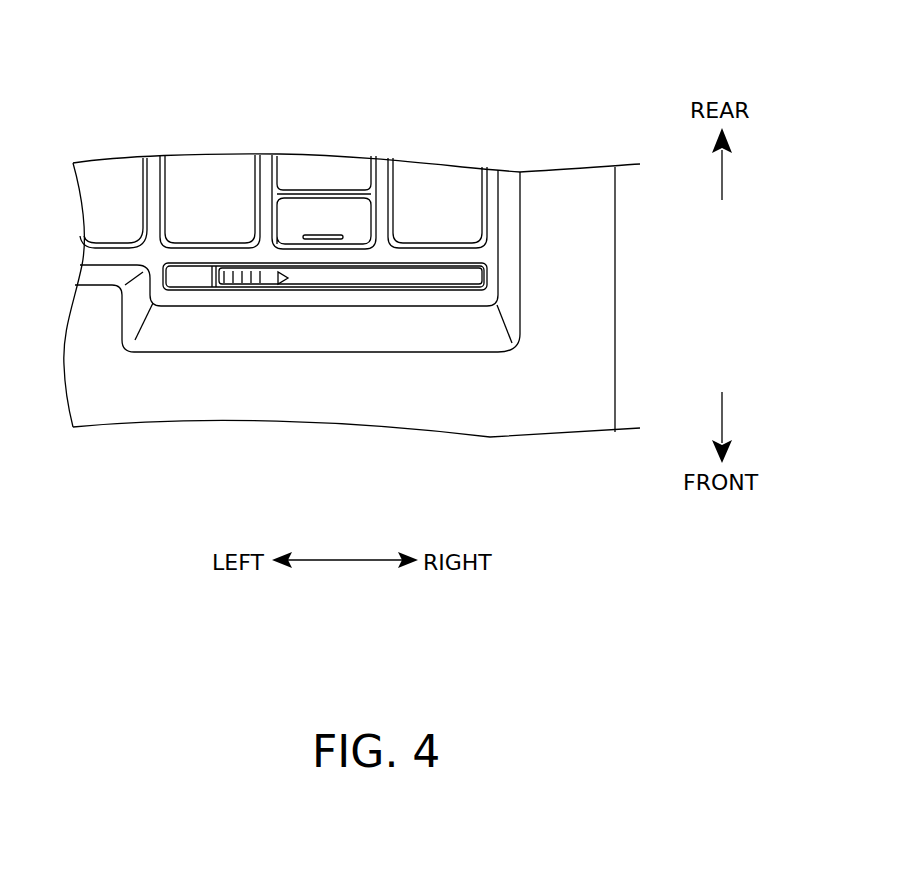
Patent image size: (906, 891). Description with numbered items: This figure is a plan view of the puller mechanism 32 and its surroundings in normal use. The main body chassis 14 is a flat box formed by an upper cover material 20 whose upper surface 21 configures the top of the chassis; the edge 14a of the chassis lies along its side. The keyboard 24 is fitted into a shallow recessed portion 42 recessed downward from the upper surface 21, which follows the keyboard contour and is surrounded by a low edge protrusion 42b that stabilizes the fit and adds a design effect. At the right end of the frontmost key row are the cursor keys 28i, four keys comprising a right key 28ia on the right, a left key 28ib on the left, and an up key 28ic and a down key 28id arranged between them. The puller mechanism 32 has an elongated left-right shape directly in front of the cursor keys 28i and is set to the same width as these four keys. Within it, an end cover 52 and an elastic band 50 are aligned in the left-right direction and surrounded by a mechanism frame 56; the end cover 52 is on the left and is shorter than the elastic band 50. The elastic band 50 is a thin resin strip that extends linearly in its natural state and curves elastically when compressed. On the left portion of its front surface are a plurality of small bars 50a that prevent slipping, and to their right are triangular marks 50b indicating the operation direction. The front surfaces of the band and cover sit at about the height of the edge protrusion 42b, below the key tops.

The main body chassis 14 is at (603, 60).
The panel edge 14a is at (615, 188).
The keyboard 24 is at (98, 118).
The cursor keys 28i is at (323, 139).
The right key 28ia is at (408, 197).
The left key 28ib is at (210, 173).
The up key 28ic is at (345, 180).
The down key 28id is at (298, 213).
The recessed portion 42 is at (498, 212).
The edge protrusion 42b is at (510, 265).
The upper cover material 20 is at (390, 318).
The upper surface 21 is at (600, 312).
The end cover 52 is at (190, 277).
The elastic band 50 is at (362, 273).
The bars 50a is at (251, 283).
The triangular marks 50b is at (285, 278).
The mechanism frame 56 is at (423, 297).
The puller mechanism 32 is at (486, 326).